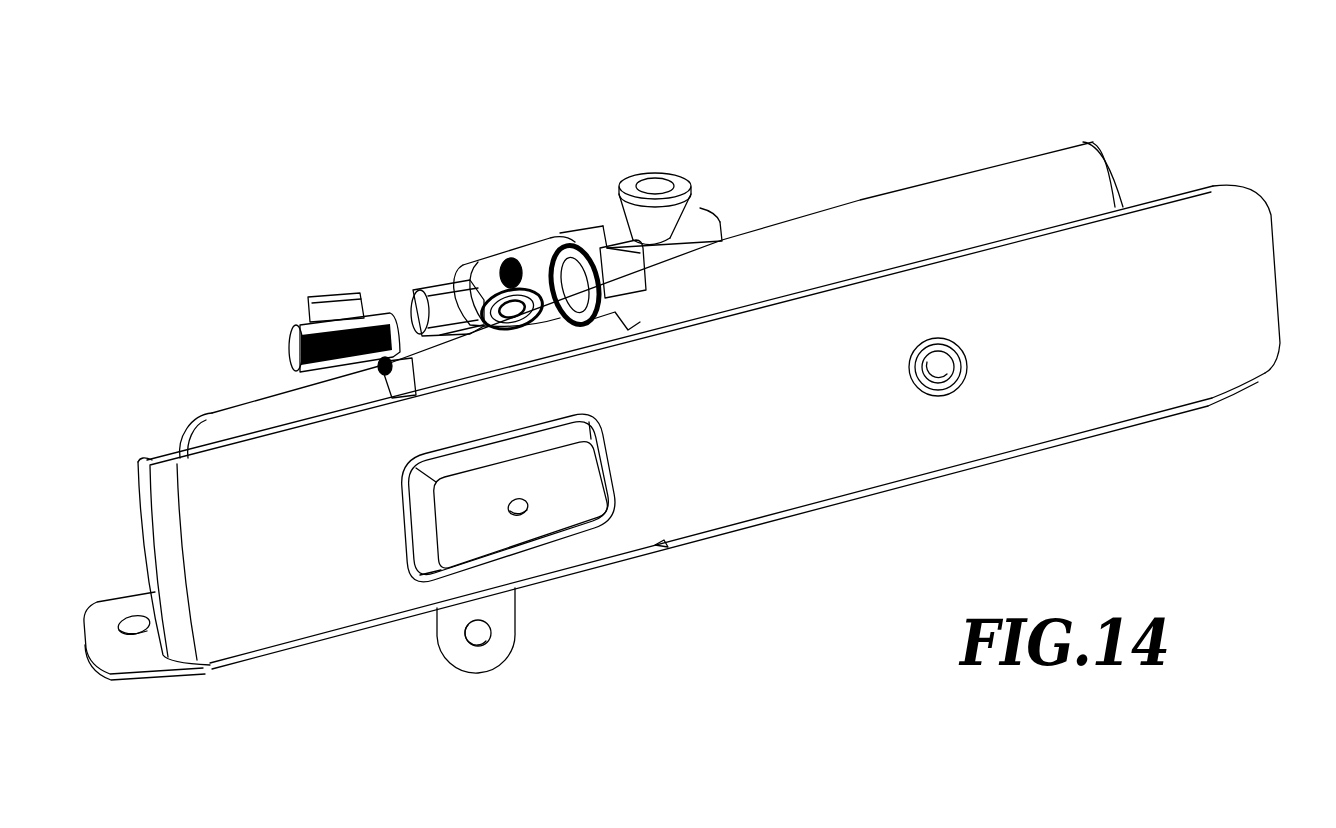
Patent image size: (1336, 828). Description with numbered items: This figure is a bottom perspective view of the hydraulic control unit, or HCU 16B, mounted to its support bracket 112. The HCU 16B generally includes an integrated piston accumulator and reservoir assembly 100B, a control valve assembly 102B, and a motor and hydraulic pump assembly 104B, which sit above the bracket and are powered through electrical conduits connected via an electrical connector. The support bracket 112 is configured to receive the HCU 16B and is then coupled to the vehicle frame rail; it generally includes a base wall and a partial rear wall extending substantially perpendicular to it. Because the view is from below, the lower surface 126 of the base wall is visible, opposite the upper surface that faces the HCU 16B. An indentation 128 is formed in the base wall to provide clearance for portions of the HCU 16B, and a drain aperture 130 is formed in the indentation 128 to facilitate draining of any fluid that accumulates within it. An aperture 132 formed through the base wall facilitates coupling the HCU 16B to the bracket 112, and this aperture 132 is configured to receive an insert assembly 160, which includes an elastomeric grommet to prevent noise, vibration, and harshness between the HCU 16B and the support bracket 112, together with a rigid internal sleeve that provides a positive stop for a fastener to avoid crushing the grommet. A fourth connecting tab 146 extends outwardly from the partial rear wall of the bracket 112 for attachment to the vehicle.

The hydraulic control unit (HCU) 16B is at (740, 140).
The integrated piston accumulator and reservoir assembly 100B is at (977, 158).
The control valve assembly 102B is at (492, 247).
The motor and hydraulic pump assembly 104B is at (231, 397).
The support bracket 112 is at (1248, 178).
The lower surface 126 is at (1222, 283).
The indentation 128 is at (565, 520).
The drain aperture 130 is at (520, 515).
The aperture 132 is at (957, 394).
The fourth connecting tab 146 is at (458, 645).
The insert assembly 160 is at (968, 362).